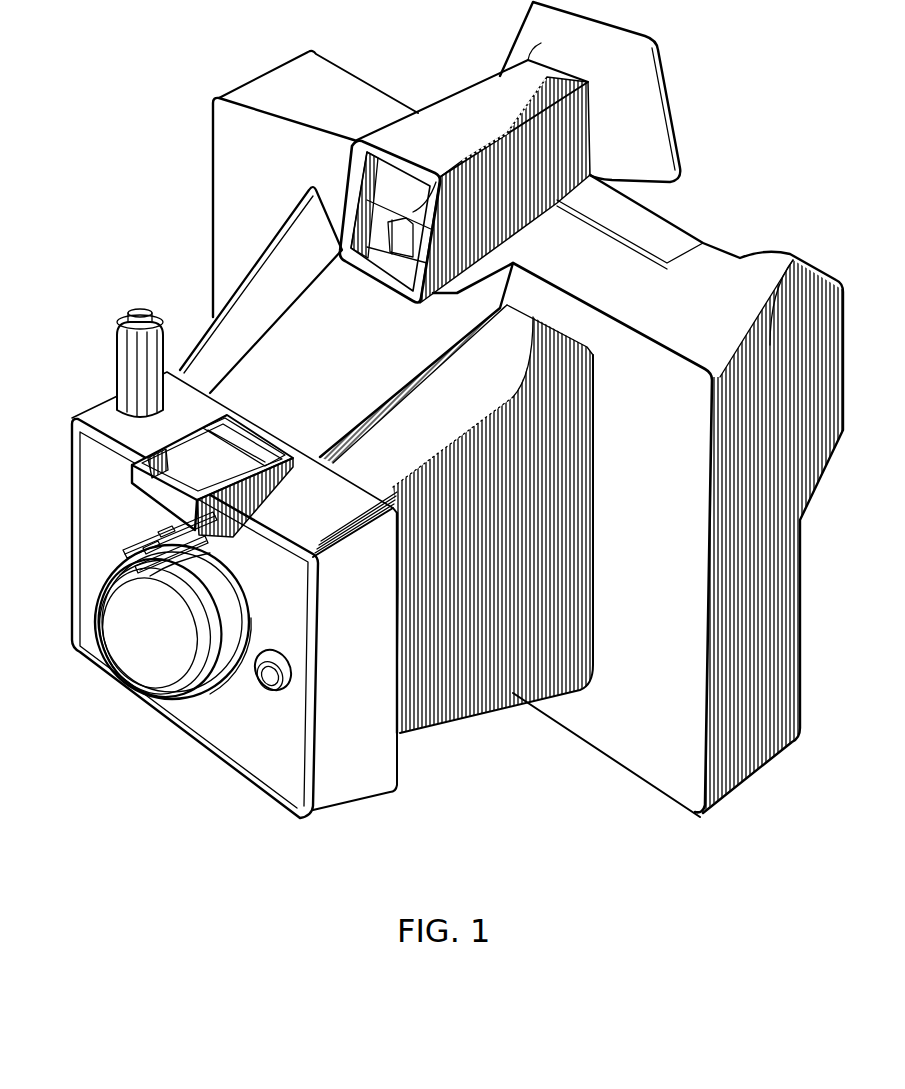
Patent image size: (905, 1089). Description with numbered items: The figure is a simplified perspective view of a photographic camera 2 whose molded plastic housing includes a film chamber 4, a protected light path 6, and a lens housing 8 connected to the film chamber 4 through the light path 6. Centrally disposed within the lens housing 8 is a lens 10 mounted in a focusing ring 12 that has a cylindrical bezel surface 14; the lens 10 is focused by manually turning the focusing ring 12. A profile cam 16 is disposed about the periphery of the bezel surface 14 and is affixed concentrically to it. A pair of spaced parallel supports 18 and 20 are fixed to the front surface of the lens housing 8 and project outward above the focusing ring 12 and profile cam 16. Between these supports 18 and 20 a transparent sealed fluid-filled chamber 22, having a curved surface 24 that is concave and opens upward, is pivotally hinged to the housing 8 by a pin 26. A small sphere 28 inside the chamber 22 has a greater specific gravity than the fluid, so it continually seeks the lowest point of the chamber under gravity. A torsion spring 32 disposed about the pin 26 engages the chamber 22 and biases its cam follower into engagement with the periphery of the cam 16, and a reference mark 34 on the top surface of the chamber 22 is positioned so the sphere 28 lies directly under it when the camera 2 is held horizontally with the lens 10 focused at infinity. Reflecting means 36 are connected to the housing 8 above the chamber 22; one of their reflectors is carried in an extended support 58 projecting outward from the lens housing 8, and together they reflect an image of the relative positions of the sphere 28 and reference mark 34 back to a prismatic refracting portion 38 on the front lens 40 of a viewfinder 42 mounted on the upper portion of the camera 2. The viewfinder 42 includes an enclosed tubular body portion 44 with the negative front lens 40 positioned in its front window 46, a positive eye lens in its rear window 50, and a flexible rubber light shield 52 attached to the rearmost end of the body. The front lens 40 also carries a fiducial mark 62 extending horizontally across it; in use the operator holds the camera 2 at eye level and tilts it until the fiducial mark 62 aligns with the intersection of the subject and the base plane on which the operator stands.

The photographic camera 2 is at (434, 752).
The film chamber 4 is at (769, 551).
The protected light path 6 is at (496, 563).
The lens housing 8 is at (364, 641).
The lens 10 is at (167, 638).
The focusing ring 12 is at (165, 698).
The cylindrical bezel surface 14 is at (207, 700).
The profile cam 16 is at (235, 604).
The support 18 is at (200, 543).
The support 20 is at (173, 518).
The transparent sealed fluid-filled chamber 22 is at (120, 557).
The curved surface 24 is at (150, 575).
The pin 26 is at (192, 546).
The sphere 28 is at (148, 540).
The torsion spring 32 is at (190, 568).
The reference mark 34 is at (160, 531).
The reflecting means 36 is at (118, 484).
The prismatic refracting portion 38 is at (398, 238).
The front lens 40 is at (370, 205).
The viewfinder 42 is at (466, 75).
The tubular body portion 44 is at (457, 117).
The front window 46 is at (362, 176).
The rear window 50 is at (680, 84).
The flexible rubber light shield 52 is at (645, 124).
The extended support 58 is at (136, 466).
The fiducial mark 62 is at (440, 181).